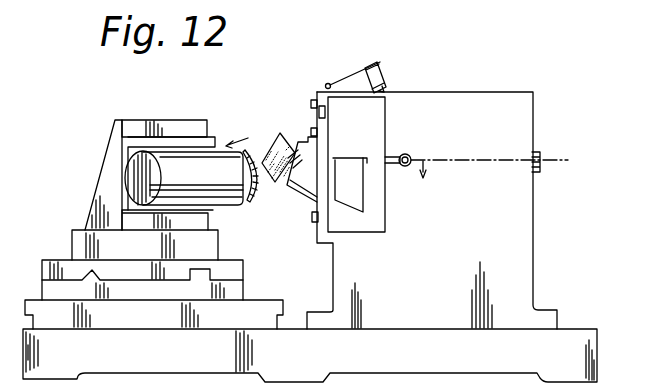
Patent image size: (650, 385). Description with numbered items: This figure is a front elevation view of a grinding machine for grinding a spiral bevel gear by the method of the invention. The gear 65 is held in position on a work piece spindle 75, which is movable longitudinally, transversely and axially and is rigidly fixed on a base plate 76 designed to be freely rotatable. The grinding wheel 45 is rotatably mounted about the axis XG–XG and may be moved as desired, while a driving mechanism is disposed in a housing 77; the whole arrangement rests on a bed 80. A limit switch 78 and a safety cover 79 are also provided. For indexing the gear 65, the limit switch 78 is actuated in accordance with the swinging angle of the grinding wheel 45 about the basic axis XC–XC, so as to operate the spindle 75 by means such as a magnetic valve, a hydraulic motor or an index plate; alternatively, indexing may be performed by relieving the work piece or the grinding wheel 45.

The grinding wheel 45 is at (288, 137).
The gear 65 is at (250, 150).
The work piece spindle 75 is at (183, 158).
The base plate 76 is at (64, 246).
The housing 77 is at (486, 106).
The limit switch 78 is at (312, 100).
The safety cover 79 is at (368, 59).
The bed 80 is at (404, 334).